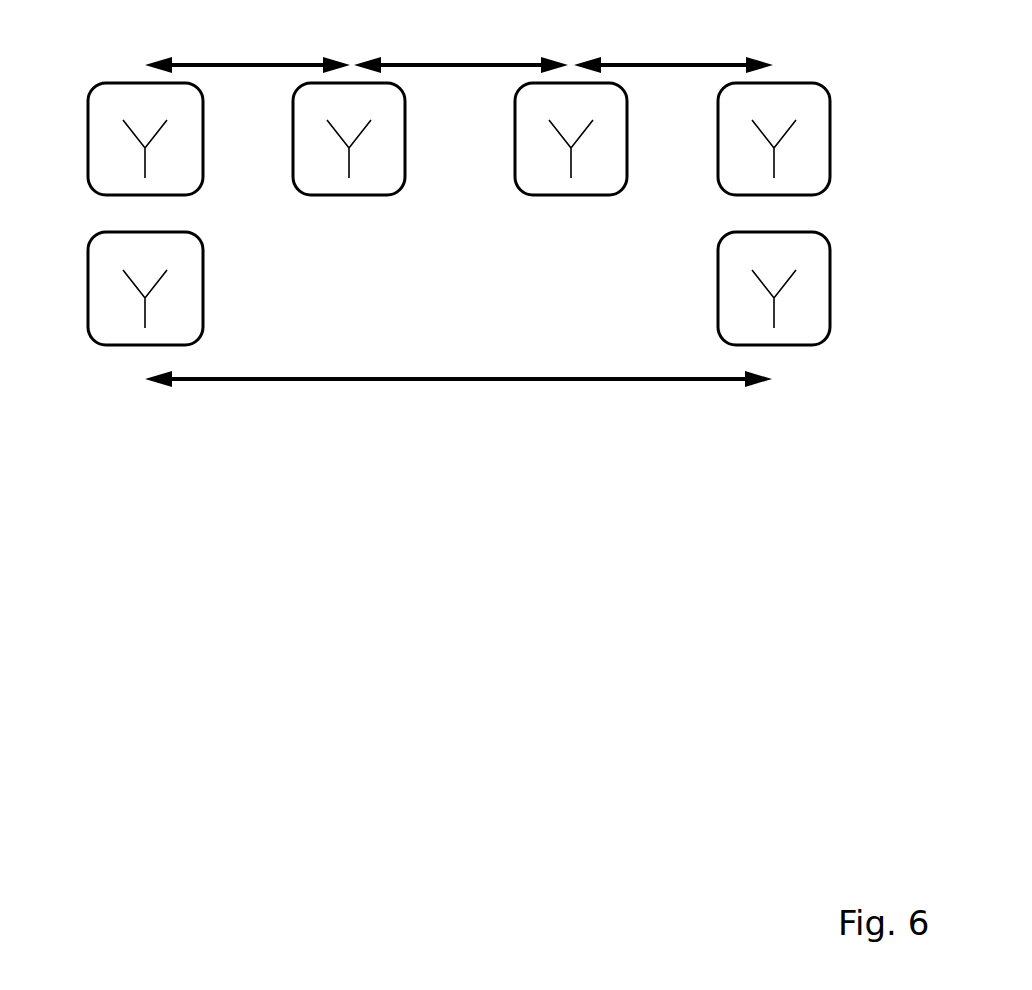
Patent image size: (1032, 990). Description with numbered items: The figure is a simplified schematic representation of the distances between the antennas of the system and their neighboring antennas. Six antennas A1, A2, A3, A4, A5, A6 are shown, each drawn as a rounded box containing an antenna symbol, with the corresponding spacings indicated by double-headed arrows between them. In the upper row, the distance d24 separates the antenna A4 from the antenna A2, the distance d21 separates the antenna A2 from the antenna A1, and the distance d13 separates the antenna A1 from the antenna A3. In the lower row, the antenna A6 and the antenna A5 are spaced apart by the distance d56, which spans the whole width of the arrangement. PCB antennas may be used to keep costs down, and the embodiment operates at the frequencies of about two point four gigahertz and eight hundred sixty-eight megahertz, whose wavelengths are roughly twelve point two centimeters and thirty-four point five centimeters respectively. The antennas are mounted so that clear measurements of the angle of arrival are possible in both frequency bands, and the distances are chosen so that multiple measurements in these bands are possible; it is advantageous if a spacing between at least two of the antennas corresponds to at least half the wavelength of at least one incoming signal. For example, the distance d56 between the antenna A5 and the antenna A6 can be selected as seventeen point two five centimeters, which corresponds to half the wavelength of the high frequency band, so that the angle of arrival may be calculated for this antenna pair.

The antenna A1 is at (595, 139).
The antenna A2 is at (318, 139).
The antenna A3 is at (799, 139).
The antenna A4 is at (115, 139).
The antenna A5 is at (799, 288).
The antenna A6 is at (115, 288).
The distance between antennas A2 and A4 d24 is at (247, 51).
The distance between antennas A2 and A1 d21 is at (461, 51).
The distance between antennas A1 and A3 d13 is at (673, 51).
The distance between antennas A5 and A6 d56 is at (458, 395).